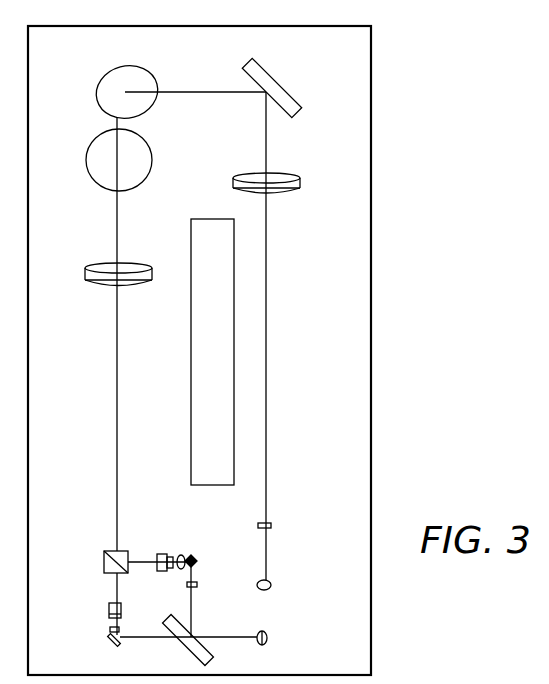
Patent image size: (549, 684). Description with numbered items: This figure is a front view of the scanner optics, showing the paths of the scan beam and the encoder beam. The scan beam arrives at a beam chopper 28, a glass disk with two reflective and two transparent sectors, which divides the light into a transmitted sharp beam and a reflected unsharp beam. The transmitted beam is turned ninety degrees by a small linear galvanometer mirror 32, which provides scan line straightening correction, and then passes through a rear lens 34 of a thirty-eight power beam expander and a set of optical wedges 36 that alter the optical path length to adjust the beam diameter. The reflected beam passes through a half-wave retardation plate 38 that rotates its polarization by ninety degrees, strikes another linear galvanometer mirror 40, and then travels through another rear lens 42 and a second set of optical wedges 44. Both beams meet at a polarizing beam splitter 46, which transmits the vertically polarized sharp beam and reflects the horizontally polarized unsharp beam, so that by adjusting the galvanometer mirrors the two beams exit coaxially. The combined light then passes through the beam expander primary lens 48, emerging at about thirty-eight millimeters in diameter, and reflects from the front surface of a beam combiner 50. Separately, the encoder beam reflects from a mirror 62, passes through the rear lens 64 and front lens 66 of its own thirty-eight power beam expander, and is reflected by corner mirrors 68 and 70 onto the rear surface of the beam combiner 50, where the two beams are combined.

The beam chopper 28 is at (188, 652).
The linear galvanometer mirror 32 is at (110, 645).
The rear lens 34 is at (110, 630).
The set of optical wedges 36 is at (108, 608).
The half-wave retardation plate 38 is at (198, 585).
The linear galvanometer mirror 40 is at (197, 558).
The rear lens 42 is at (181, 555).
The set of optical wedges 44 is at (160, 554).
The polarizing beam splitter 46 is at (103, 562).
The front lens 48 is at (95, 284).
The beam combiner 50 is at (147, 158).
The mirror 62 is at (271, 585).
The rear lens 64 is at (271, 525).
The front lens 66 is at (300, 178).
The corner mirror 68 is at (285, 98).
The corner mirror 70 is at (147, 78).